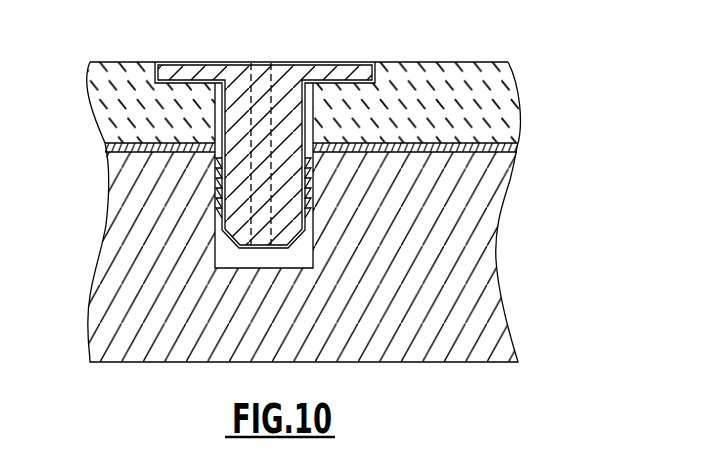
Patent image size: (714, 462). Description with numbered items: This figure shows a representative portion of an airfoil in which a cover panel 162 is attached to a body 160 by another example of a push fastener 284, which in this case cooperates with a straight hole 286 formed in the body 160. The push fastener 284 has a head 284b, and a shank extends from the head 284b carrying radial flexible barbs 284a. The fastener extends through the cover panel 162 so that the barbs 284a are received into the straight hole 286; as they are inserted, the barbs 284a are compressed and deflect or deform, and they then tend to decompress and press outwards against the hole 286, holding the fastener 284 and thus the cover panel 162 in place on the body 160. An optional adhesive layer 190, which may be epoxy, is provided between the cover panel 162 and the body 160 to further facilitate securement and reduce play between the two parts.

The body 160 is at (487, 336).
The cover panel 162 is at (530, 56).
The adhesive layer 190 is at (480, 148).
The push fastener 284 is at (201, 127).
The radial flexible barbs 284a is at (213, 213).
The head 284b is at (187, 63).
The straight hole 286 is at (248, 111).